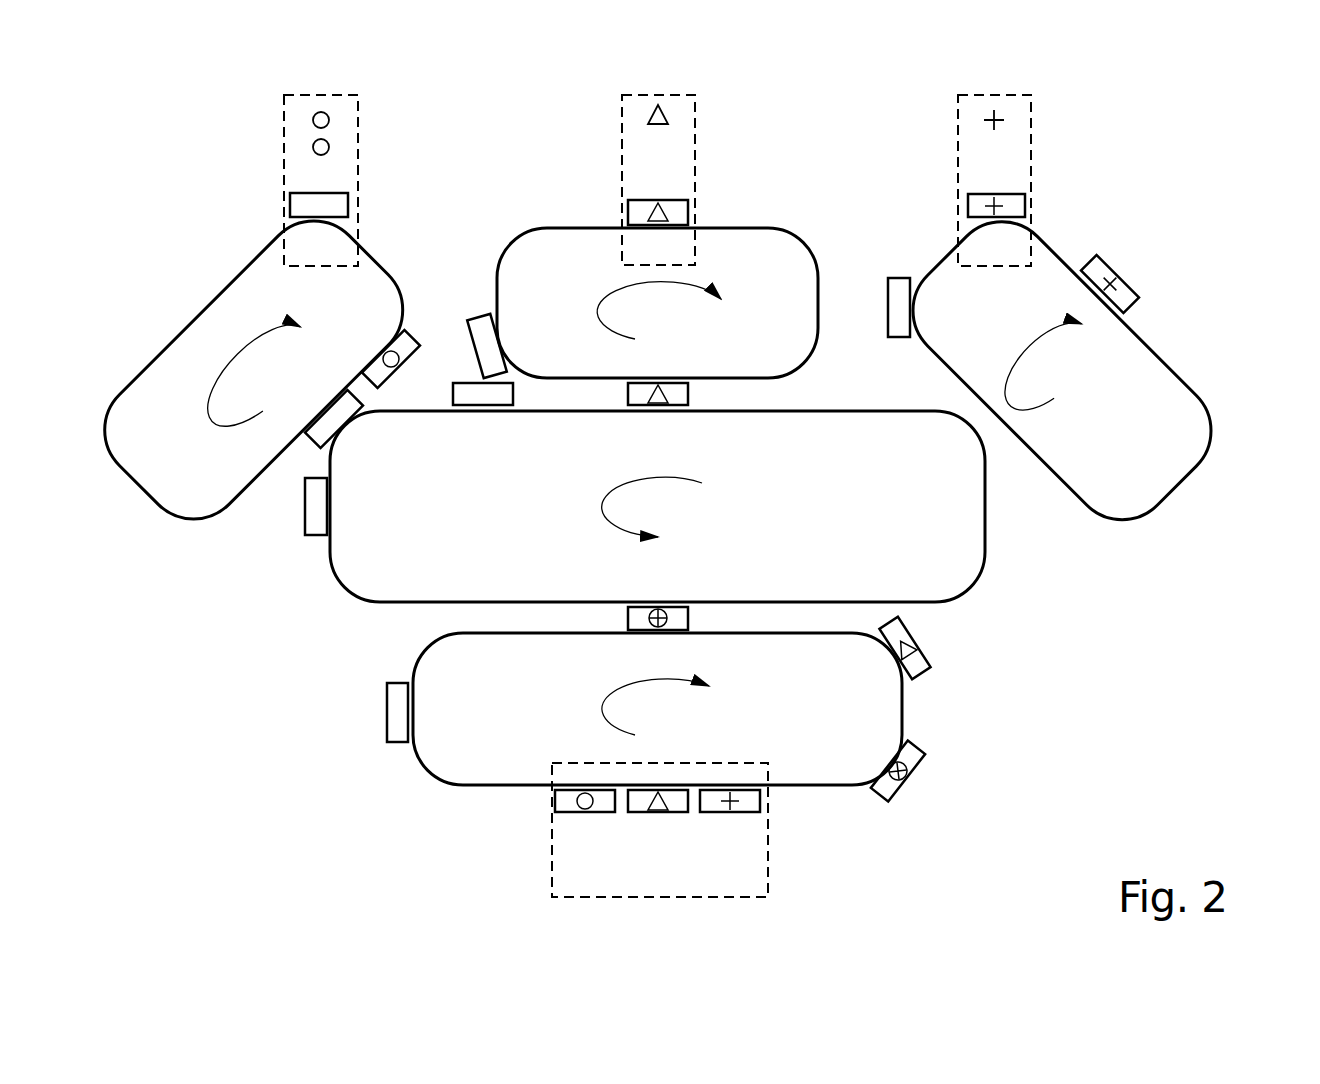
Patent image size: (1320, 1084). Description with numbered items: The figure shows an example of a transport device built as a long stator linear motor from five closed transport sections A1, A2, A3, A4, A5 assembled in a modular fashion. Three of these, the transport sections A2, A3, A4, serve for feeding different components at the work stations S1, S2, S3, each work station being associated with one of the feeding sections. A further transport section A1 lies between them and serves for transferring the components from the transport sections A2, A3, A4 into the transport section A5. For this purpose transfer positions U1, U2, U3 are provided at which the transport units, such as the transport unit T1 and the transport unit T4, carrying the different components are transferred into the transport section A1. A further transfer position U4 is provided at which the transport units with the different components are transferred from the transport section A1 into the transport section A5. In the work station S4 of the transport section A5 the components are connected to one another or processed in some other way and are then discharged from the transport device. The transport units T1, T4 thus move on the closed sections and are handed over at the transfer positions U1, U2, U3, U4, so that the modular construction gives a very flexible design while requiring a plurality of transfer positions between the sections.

The transport section A1 is at (970, 587).
The transport section A2 is at (160, 498).
The transport section A3 is at (532, 228).
The transport section A4 is at (1168, 363).
The transport section A5 is at (832, 785).
The work station S1 is at (284, 143).
The work station S2 is at (695, 137).
The work station S3 is at (1032, 152).
The work station S4 is at (552, 830).
The transport unit T1 is at (687, 213).
The transport unit T4 is at (387, 712).
The transfer position U1 is at (353, 433).
The transfer position U2 is at (622, 413).
The transfer position U3 is at (973, 452).
The transfer position U4 is at (697, 598).